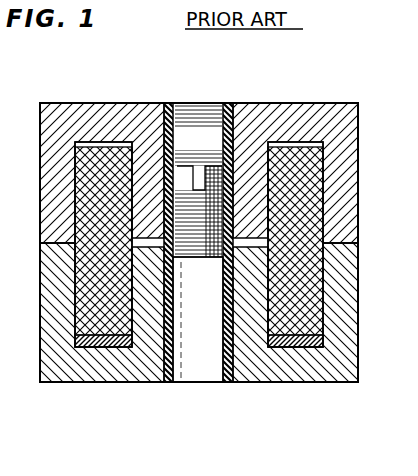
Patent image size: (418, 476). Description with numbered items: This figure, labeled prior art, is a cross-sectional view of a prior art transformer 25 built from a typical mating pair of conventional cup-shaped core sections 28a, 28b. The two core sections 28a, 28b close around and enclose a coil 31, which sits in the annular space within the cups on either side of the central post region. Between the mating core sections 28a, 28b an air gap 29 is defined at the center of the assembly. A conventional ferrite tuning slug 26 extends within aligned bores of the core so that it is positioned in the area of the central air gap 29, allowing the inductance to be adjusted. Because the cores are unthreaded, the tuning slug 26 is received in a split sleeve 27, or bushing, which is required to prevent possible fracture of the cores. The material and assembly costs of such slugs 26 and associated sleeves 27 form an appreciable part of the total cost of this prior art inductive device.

The prior art transformer 25 is at (291, 93).
The tuning slug 26 is at (183, 182).
The split sleeve 27 is at (186, 378).
The cup-shaped core section 28a is at (362, 158).
The cup-shaped core section 28b is at (362, 305).
The air gap 29 is at (233, 262).
The coil 31 is at (78, 272).